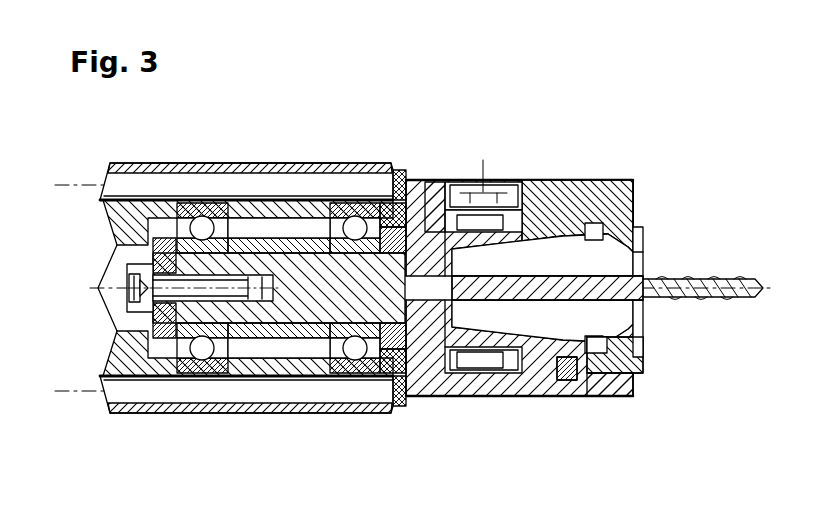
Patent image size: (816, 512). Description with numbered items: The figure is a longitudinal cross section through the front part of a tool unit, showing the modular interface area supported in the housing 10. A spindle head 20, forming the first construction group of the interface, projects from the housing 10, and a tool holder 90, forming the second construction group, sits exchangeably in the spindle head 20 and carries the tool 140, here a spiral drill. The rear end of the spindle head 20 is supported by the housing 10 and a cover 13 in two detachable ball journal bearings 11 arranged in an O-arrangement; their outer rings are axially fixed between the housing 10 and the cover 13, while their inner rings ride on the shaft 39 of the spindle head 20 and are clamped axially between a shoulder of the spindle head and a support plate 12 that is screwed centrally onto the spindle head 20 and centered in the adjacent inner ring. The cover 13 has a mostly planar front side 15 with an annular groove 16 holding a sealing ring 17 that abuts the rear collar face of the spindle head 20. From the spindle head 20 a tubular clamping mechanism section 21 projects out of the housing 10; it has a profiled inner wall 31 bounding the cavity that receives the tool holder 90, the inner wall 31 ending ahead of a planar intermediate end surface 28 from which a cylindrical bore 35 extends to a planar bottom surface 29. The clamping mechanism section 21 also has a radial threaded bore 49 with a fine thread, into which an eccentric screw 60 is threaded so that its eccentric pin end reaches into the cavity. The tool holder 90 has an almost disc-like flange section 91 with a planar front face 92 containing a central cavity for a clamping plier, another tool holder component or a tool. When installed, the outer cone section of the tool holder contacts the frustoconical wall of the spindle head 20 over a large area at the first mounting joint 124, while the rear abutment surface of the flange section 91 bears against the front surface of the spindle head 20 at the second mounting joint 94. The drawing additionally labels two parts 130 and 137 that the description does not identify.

The housing 10 is at (220, 415).
The ball journal bearings 11 is at (202, 348).
The support plate 12 is at (162, 326).
The cover 13 is at (393, 380).
The front side 15 is at (389, 203).
The annular groove 16 is at (338, 172).
The sealing ring 17 is at (401, 402).
The spindle head 20 is at (478, 400).
The clamping mechanism section 21 is at (452, 178).
The intermediate end surface 28 is at (279, 215).
The bottom surface 29 is at (307, 254).
The inner wall 31 is at (432, 192).
The cylindrical bore 35 is at (426, 398).
The shaft 39 is at (282, 305).
The threaded bore 49 is at (523, 188).
The eccentric screw 60 is at (491, 178).
The tool holder 90 is at (600, 400).
The flange section 91 is at (560, 384).
The front face 92 is at (634, 380).
The second mounting joint 94 is at (527, 203).
The first mounting joint 124 is at (550, 387).
The clamping sleeve 130 is at (573, 260).
The housing portion 137 is at (630, 185).
The tool 140 is at (652, 300).